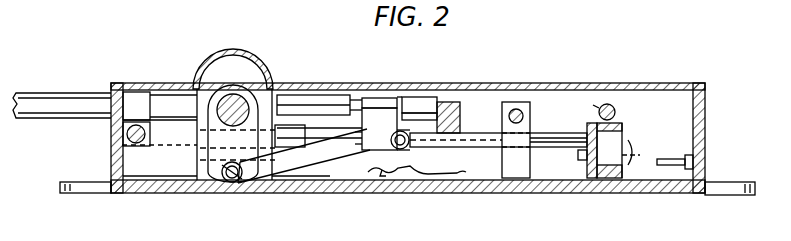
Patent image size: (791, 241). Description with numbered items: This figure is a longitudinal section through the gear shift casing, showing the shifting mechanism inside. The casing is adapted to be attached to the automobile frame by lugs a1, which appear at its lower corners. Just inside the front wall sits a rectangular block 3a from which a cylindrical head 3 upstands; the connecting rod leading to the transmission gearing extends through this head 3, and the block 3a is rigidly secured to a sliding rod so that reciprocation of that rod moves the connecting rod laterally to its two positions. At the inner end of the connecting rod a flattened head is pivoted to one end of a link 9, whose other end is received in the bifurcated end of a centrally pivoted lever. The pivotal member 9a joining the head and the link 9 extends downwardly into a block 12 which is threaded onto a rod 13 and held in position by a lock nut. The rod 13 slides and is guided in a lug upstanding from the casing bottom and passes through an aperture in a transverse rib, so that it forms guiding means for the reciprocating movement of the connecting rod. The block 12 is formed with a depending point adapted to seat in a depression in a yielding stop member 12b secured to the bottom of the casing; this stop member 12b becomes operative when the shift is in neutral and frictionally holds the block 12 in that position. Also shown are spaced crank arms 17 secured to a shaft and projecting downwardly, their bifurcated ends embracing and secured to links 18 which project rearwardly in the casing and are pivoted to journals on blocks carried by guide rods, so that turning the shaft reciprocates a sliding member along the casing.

The cylindrical head 3 is at (131, 101).
The rectangular block 3a is at (143, 147).
The lugs a1 is at (78, 181).
The link 9 is at (400, 112).
The pivotal member 9a is at (377, 123).
The block 12 is at (364, 128).
The yielding stop member 12b is at (410, 176).
The rod 13 is at (443, 148).
The crank arms 17 is at (226, 155).
The links 18 is at (338, 158).